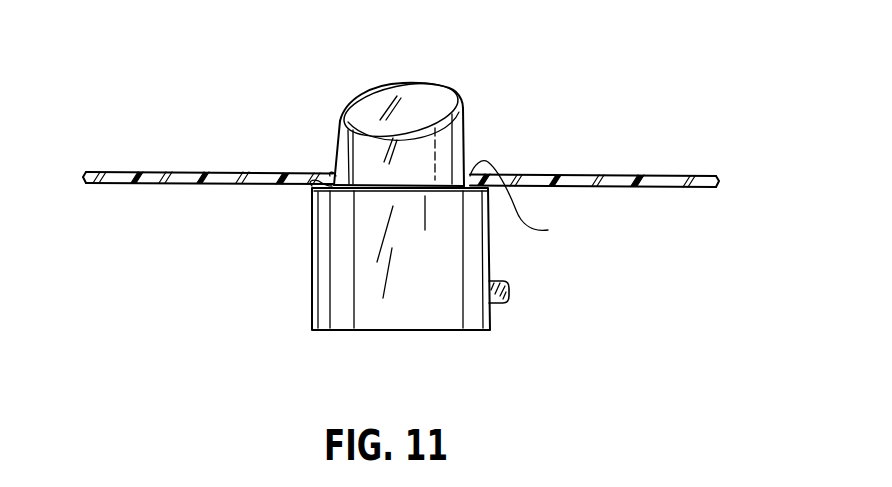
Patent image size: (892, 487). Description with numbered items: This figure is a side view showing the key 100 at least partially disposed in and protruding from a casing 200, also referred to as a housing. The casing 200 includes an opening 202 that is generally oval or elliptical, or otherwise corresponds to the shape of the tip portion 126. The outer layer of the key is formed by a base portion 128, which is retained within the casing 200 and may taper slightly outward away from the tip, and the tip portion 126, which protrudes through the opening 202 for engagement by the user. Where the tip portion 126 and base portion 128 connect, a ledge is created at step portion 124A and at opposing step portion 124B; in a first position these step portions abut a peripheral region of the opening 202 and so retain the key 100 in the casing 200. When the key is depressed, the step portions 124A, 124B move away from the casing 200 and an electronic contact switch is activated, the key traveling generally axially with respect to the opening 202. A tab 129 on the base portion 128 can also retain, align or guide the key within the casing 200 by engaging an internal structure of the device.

The key 100 is at (451, 81).
The tip portion 126 is at (466, 138).
The base portion 128 is at (310, 290).
The tab 129 is at (514, 290).
The step portion 124A is at (548, 230).
The opposing step portion 124B is at (312, 186).
The casing 200 is at (614, 176).
The opening 202 is at (335, 175).